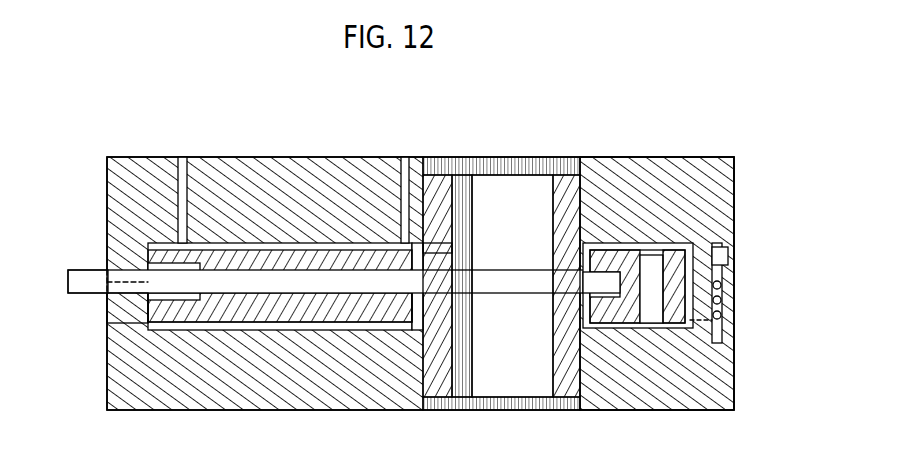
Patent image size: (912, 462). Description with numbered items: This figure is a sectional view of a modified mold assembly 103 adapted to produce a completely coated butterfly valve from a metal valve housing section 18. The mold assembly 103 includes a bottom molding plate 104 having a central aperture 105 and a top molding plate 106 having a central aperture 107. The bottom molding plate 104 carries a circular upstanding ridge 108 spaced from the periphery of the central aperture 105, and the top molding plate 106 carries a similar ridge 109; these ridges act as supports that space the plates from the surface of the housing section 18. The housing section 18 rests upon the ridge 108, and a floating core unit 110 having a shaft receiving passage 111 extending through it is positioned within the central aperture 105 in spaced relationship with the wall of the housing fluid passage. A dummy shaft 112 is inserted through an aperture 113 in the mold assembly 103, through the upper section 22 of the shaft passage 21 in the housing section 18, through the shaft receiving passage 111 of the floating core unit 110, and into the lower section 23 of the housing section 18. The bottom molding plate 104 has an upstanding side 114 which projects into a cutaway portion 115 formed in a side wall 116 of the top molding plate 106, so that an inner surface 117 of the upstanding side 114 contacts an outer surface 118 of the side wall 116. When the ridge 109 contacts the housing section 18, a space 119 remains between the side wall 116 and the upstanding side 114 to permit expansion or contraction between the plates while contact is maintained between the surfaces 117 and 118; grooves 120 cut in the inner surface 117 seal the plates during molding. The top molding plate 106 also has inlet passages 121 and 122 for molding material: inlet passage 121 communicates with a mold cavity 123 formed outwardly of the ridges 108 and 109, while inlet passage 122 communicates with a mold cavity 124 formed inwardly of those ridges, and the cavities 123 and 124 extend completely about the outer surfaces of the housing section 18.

The mold assembly 103 is at (130, 118).
The bottom molding plate 104 is at (705, 398).
The central aperture 105 is at (566, 410).
The top molding plate 106 is at (705, 183).
The central aperture 107 is at (575, 165).
The circular upstanding ridge 108 is at (578, 350).
The ridge 109 is at (592, 233).
The floating core unit 110 is at (470, 175).
The shaft receiving passage 111 is at (440, 272).
The dummy shaft 112 is at (83, 272).
The aperture 113 is at (125, 308).
The upstanding side 114 is at (722, 292).
The cutaway portion 115 is at (720, 250).
The side wall 116 is at (698, 265).
The inner surface 117 is at (722, 268).
The outer surface 118 is at (718, 345).
The space 119 is at (727, 258).
The grooves 120 is at (715, 312).
The inlet passage 121 is at (182, 158).
The inlet passage 122 is at (405, 158).
The mold cavity 123 is at (255, 250).
The mold cavity 124 is at (445, 248).
The housing section 18 is at (412, 318).
The shaft passage 21 is at (357, 294).
The upper section 22 is at (300, 300).
The lower section 23 is at (570, 268).